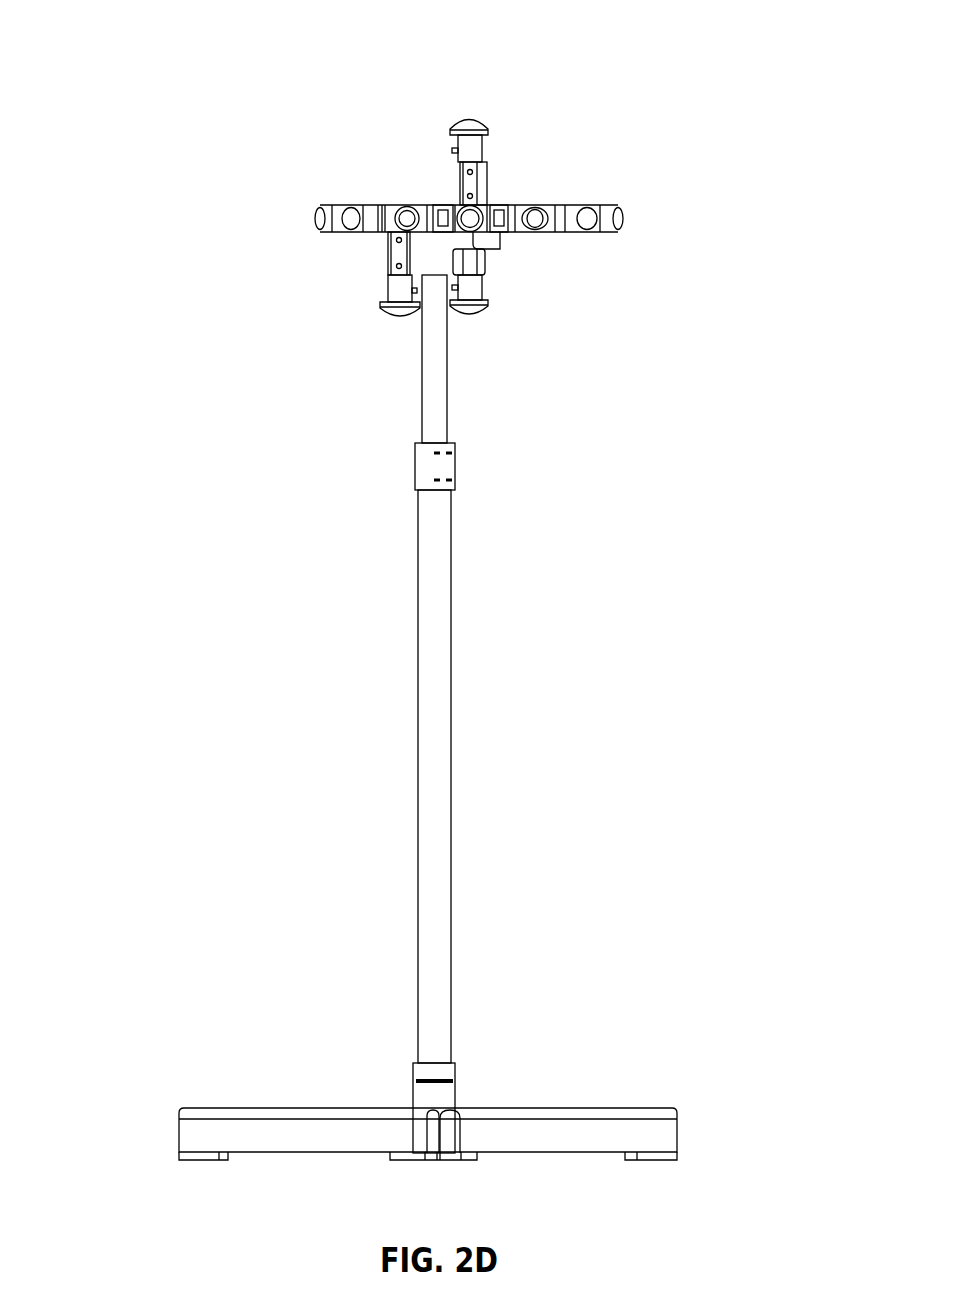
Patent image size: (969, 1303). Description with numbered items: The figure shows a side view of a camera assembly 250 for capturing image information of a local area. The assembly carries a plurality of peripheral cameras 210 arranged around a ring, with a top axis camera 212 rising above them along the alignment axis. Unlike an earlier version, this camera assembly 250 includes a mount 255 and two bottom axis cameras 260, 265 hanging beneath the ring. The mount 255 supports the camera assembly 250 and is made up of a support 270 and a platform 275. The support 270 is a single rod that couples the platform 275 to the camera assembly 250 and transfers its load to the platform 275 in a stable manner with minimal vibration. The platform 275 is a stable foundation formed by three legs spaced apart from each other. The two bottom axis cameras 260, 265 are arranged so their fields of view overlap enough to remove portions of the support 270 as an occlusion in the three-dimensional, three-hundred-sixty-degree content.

The camera assembly 250 is at (98, 50).
The peripheral cameras 210 is at (653, 145).
The top axis camera 212 is at (496, 136).
The bottom axis camera 260 is at (371, 275).
The bottom axis camera 265 is at (477, 289).
The mount 255 is at (411, 536).
The support 270 is at (443, 633).
The platform 275 is at (508, 1113).